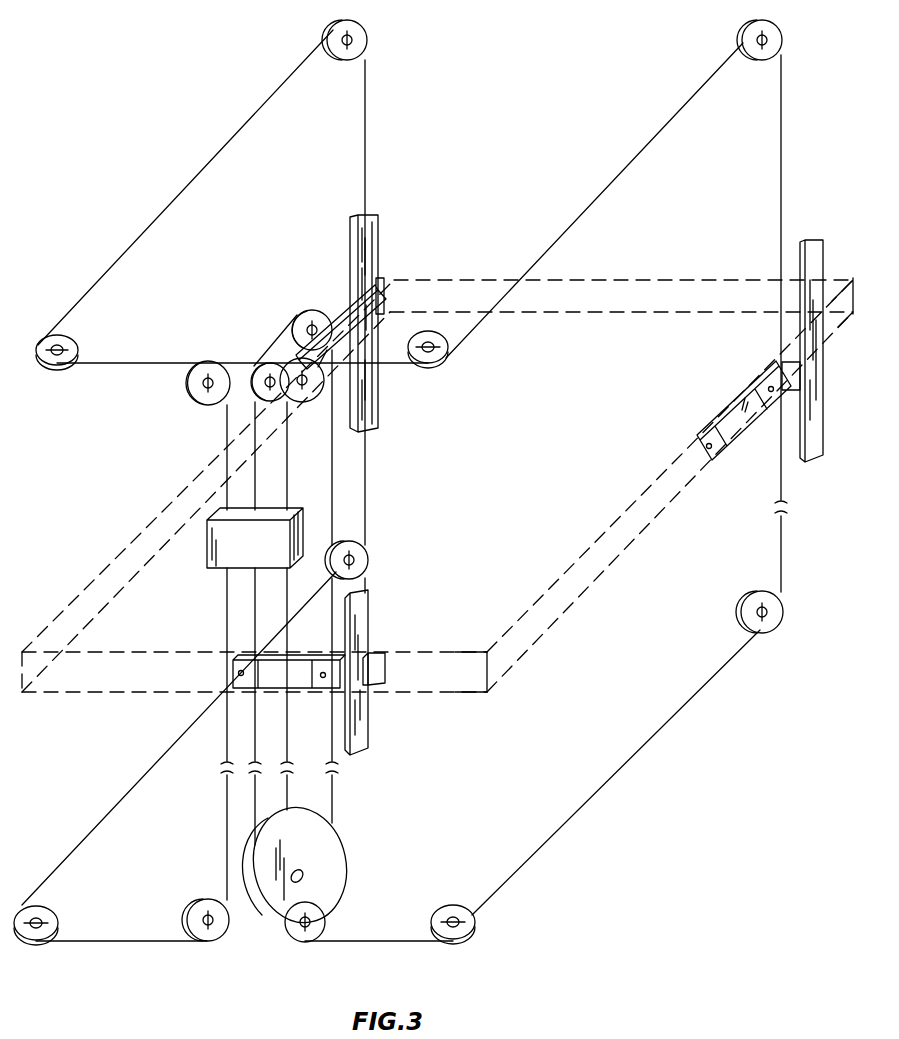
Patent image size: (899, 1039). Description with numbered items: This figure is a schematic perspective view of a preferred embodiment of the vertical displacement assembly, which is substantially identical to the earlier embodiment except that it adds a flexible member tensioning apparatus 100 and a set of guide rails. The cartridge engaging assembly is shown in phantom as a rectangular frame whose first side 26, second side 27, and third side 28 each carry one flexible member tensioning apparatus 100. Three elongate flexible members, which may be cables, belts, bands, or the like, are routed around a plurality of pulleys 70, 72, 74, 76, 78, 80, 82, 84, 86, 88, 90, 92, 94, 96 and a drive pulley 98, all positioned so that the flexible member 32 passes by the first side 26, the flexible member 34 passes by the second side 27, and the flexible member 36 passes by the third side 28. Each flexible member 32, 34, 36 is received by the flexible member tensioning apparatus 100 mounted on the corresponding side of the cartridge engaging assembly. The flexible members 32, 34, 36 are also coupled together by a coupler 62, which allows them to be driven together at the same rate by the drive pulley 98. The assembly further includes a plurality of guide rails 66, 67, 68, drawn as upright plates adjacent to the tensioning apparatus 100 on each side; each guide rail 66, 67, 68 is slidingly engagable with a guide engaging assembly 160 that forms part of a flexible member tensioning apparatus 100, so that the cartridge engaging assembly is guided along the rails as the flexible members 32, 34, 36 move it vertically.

The first side 26 is at (644, 556).
The second side 27 is at (441, 690).
The third side 28 is at (116, 558).
The flexible member 32 is at (287, 462).
The flexible member 34 is at (255, 447).
The flexible member 36 is at (227, 480).
The coupler 62 is at (216, 568).
The guide rail 66 is at (825, 437).
The guide rail 67 is at (368, 618).
The guide rail 68 is at (350, 248).
The pulley 70 is at (309, 402).
The pulley 72 is at (450, 356).
The pulley 74 is at (781, 40).
The pulley 76 is at (781, 612).
The pulley 78 is at (460, 912).
The pulley 80 is at (306, 942).
The pulley 82 is at (195, 394).
The pulley 84 is at (73, 346).
The pulley 86 is at (366, 42).
The pulley 88 is at (364, 564).
The pulley 90 is at (42, 938).
The pulley 92 is at (205, 942).
The pulley 94 is at (262, 366).
The pulley 96 is at (303, 318).
The drive pulley 98 is at (340, 857).
The flexible member tensioning apparatus 100 is at (345, 325).
The guide engaging assembly 160 is at (382, 656).